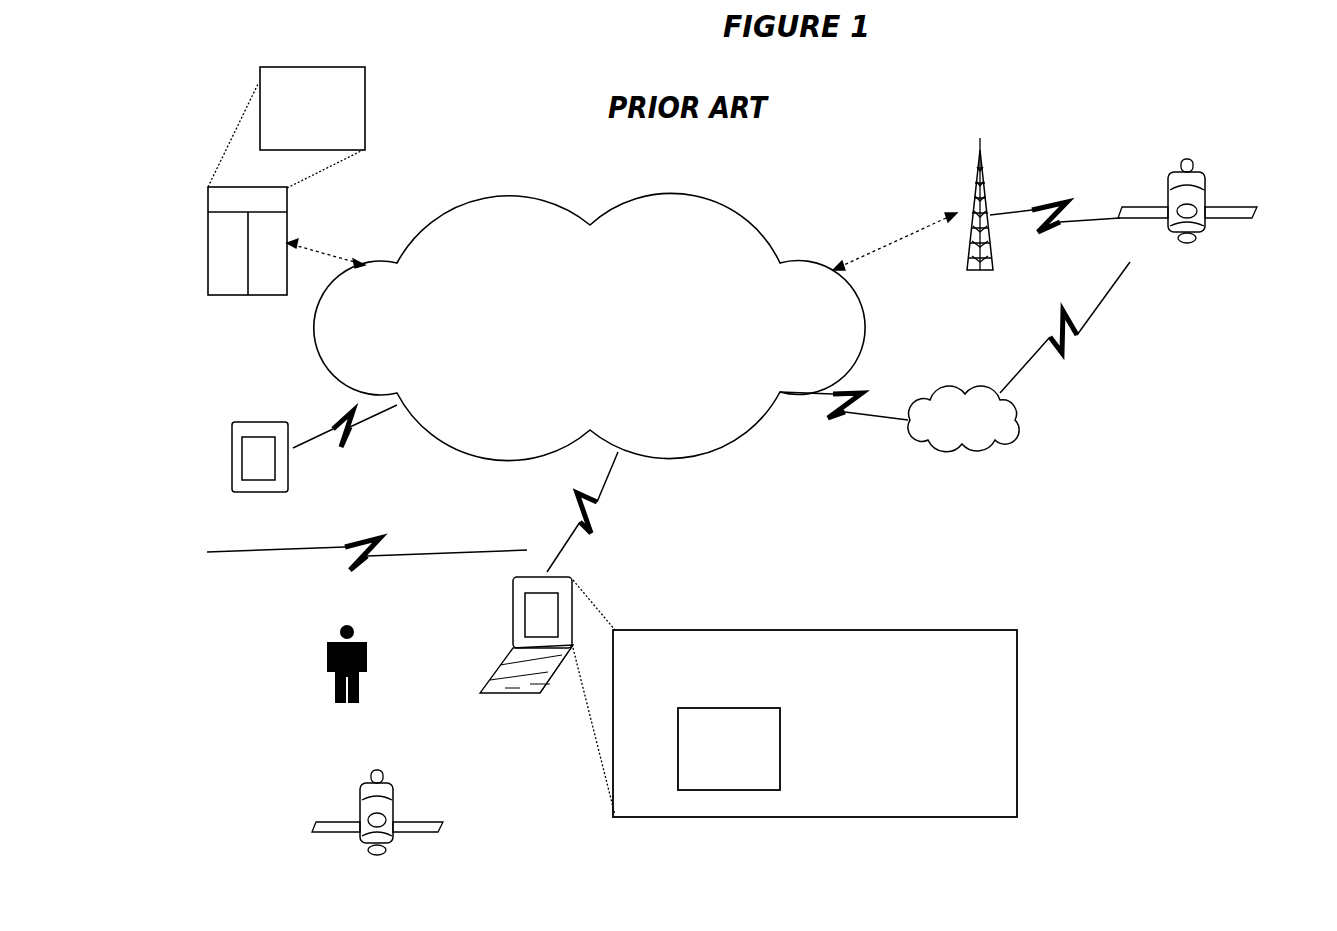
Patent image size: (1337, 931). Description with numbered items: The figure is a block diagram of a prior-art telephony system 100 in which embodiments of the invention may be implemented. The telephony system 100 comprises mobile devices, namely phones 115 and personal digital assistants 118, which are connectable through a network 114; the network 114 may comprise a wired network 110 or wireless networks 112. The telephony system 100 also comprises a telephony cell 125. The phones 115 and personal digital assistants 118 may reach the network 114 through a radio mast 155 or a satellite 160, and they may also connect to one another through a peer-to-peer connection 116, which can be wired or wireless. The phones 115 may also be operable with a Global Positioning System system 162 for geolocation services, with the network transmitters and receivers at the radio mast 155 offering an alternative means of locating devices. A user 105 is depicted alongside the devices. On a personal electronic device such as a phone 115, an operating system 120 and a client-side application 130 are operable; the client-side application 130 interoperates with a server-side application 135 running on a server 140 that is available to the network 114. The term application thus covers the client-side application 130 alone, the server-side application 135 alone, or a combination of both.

The telephony system 100 is at (510, 135).
The user 105 is at (335, 690).
The wired network 110 is at (880, 252).
The wireless networks 112 is at (350, 445).
The network 114 is at (640, 197).
The phones 115 is at (517, 600).
The peer-to-peer connection 116 is at (302, 568).
The personal digital assistant 118 is at (232, 492).
The operating system 120 is at (1017, 723).
The telephony cell 125 is at (963, 419).
The client-side application 130 is at (780, 752).
The server-side application 135 is at (365, 110).
The server 140 is at (248, 295).
The radio mast 155 is at (965, 265).
The satellite 160 is at (1227, 188).
The Global Positioning System system 162 is at (415, 805).